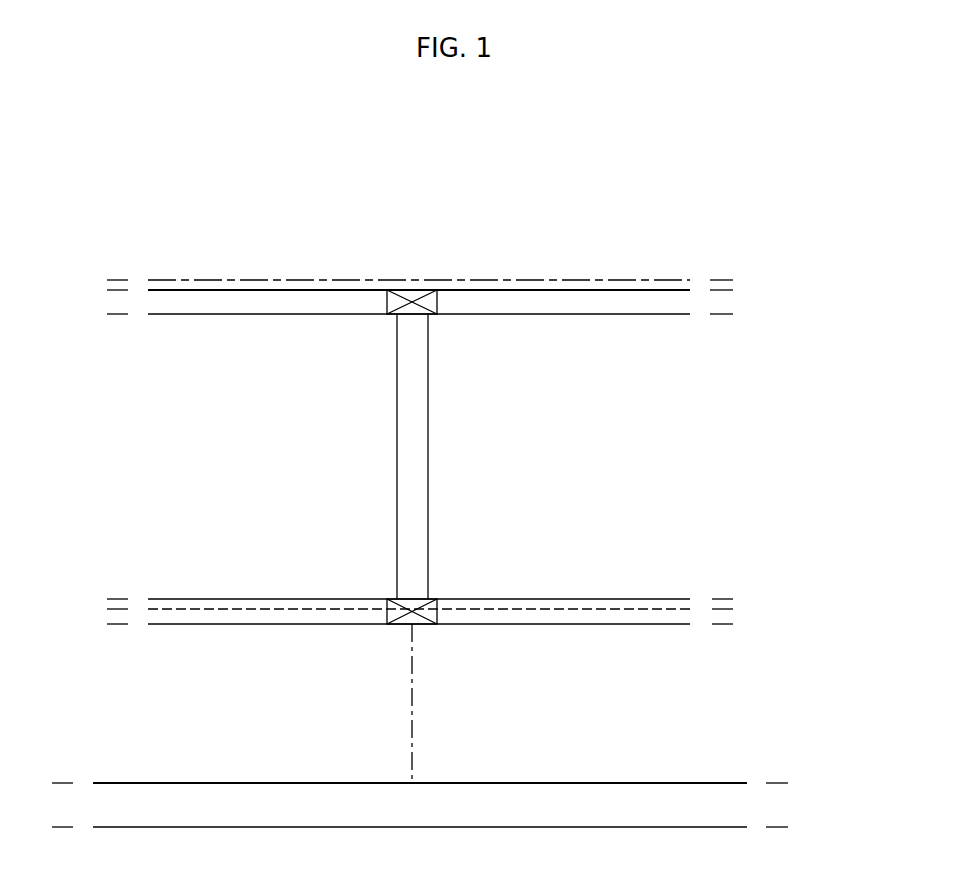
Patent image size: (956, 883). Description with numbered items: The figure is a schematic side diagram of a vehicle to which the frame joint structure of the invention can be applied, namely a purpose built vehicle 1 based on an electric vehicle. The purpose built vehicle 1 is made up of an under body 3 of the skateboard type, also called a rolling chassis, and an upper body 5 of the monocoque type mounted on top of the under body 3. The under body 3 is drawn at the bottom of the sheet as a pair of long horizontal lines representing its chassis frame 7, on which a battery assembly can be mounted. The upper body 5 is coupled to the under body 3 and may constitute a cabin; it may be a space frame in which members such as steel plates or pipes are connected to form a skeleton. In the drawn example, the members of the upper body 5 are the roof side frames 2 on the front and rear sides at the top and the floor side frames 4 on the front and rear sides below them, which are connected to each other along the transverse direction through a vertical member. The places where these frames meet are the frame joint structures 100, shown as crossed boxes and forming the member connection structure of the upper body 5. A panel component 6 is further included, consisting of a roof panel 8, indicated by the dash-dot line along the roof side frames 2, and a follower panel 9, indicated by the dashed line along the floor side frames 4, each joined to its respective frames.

The purpose built vehicle 1 is at (393, 187).
The roof side frames 2 is at (208, 314).
The under body 3 is at (718, 762).
The floor side frames 4 is at (208, 624).
The upper body 5 is at (782, 260).
The panel component 6 is at (558, 250).
The chassis frame 7 is at (170, 783).
The roof panel 8 is at (494, 280).
The follower panel 9 is at (593, 608).
The frame joint structure 100 is at (362, 343).